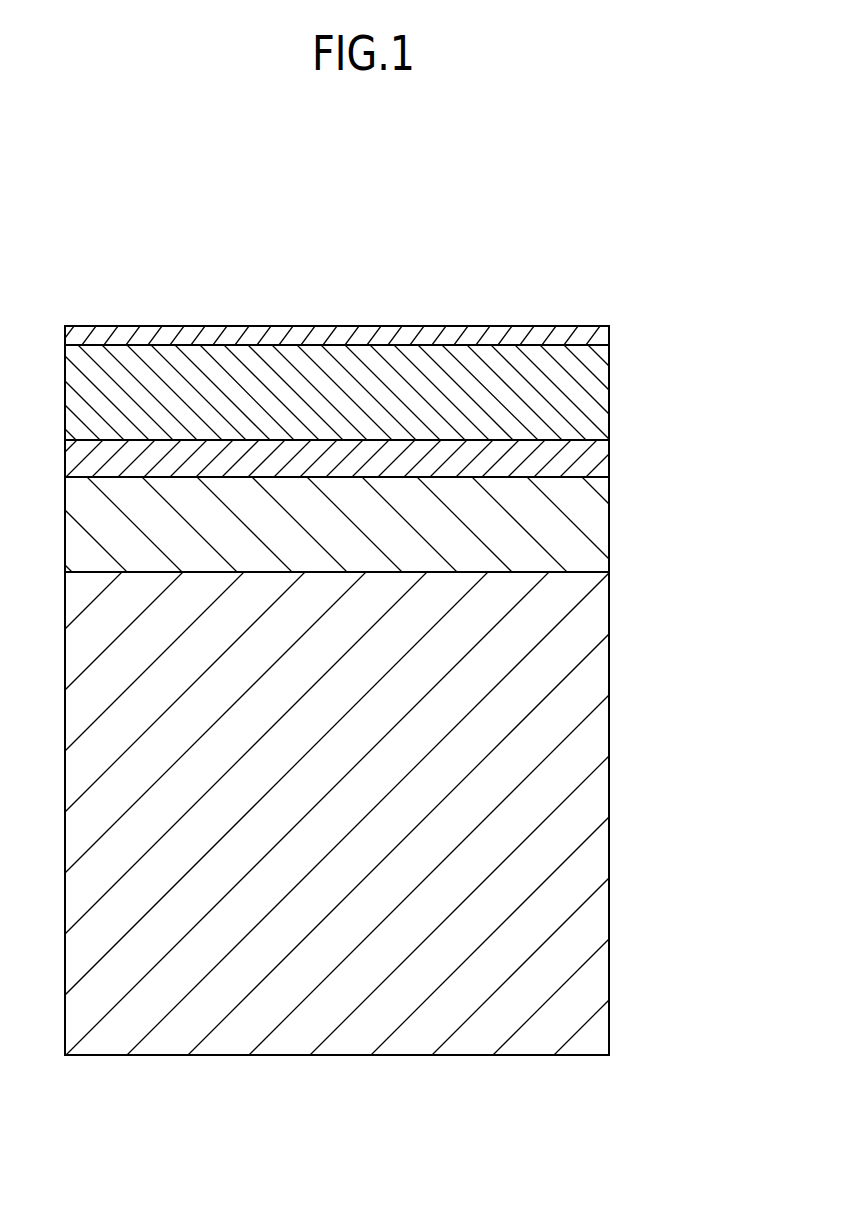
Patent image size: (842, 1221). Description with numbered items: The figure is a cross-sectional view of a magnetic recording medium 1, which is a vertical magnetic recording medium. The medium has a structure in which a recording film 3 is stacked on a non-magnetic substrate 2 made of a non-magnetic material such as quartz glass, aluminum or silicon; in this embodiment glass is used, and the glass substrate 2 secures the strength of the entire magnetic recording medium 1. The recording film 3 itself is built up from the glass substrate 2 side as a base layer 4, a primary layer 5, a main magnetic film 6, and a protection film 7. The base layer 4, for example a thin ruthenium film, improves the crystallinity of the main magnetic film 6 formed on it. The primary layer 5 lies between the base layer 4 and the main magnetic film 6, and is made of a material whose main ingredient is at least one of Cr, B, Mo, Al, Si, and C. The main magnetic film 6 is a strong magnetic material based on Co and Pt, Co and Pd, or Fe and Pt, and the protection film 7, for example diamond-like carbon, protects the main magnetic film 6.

The magnetic recording medium 1 is at (85, 212).
The non-magnetic substrate 2 is at (592, 762).
The recording film 3 is at (385, 444).
The base layer 4 is at (593, 520).
The primary layer 5 is at (593, 457).
The main magnetic film 6 is at (593, 392).
The protection film 7 is at (390, 333).